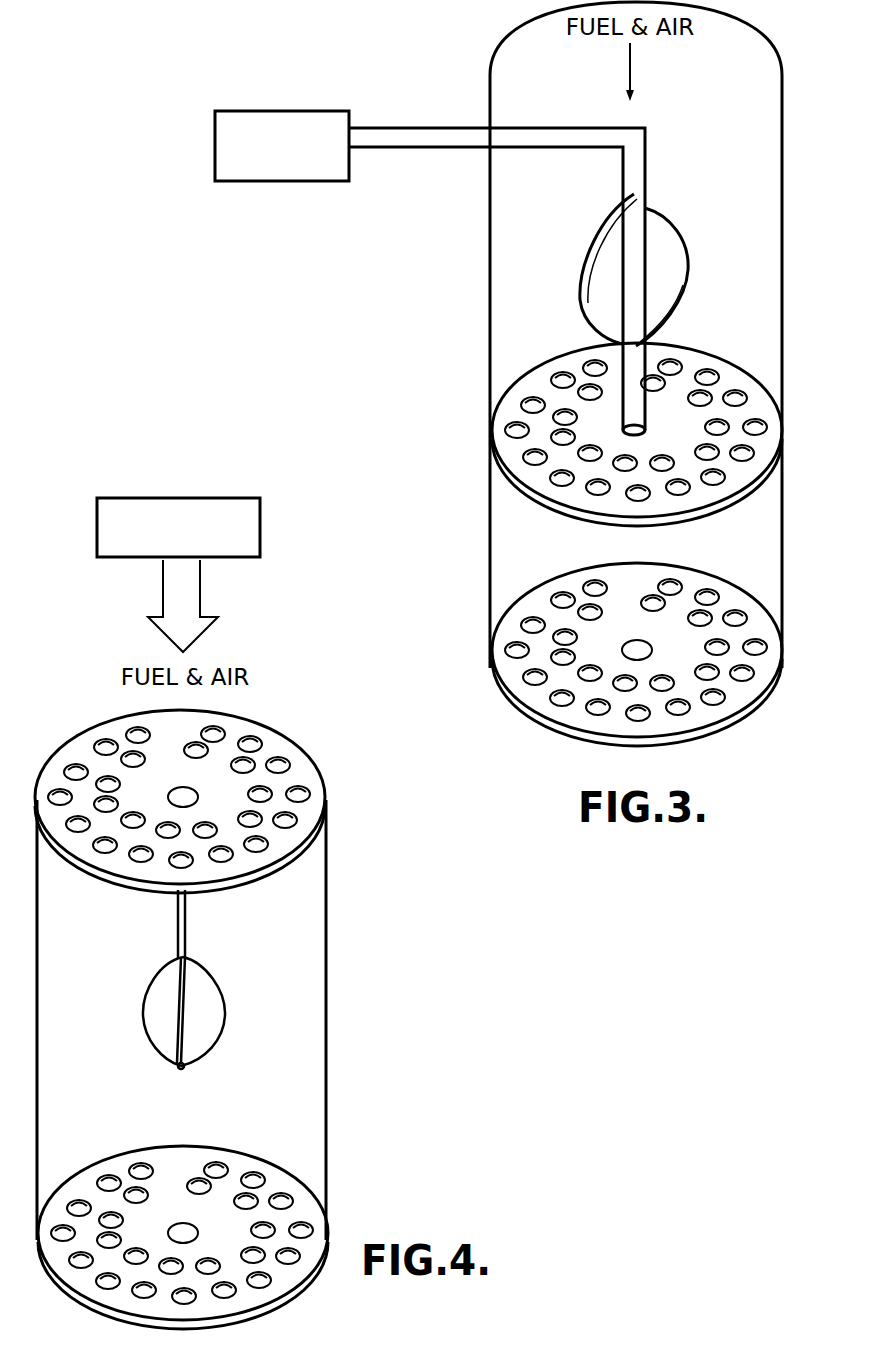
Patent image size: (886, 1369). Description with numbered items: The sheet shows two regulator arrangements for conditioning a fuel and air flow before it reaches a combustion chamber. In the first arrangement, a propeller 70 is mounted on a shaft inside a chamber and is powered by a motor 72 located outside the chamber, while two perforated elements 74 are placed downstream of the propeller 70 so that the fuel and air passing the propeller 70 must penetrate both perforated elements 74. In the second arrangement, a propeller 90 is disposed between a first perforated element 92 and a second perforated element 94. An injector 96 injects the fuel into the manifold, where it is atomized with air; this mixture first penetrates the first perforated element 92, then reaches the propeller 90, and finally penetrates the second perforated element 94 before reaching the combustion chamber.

In FIG. 3, the propeller 70 is at (605, 300).
In FIG. 3, the motor 72 is at (312, 181).
In FIG. 3, the perforated elements 74 is at (543, 442).
In FIG. 4, the propeller 90 is at (200, 1028).
In FIG. 4, the first perforated element 92 is at (227, 748).
In FIG. 4, the second perforated element 94 is at (237, 1220).
In FIG. 4, the injector 96 is at (140, 557).